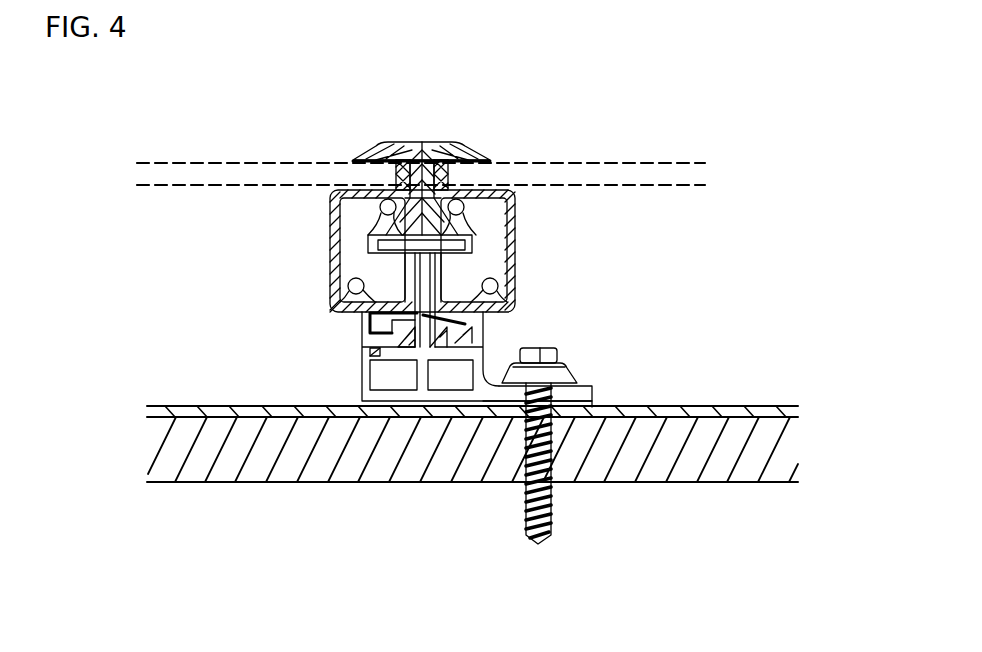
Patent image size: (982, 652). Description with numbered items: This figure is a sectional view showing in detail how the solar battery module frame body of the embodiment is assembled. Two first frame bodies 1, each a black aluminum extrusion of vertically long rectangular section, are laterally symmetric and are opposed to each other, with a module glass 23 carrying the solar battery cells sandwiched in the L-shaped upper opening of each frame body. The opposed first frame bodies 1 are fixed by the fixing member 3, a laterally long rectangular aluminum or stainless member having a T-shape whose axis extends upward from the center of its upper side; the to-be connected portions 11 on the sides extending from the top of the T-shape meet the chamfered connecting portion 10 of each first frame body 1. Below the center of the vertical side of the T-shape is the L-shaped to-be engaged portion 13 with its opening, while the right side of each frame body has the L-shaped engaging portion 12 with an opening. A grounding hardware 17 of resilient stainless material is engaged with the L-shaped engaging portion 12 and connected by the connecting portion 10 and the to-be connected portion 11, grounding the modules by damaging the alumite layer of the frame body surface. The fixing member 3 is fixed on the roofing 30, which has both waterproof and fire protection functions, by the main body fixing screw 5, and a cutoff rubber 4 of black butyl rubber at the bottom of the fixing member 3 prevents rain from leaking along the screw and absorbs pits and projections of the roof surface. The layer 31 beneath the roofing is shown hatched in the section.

The first frame body 1 is at (388, 143).
The fixing member 3 is at (578, 390).
The cutoff rubber 4 is at (365, 400).
The main body fixing screw 5 is at (549, 356).
The connecting portion 10 is at (340, 261).
The to-be connected portion 11 is at (340, 222).
The L-shaped engaging portion 12 is at (405, 332).
The L-shaped to-be engaged portion 13 is at (365, 321).
The grounding hardware 17 is at (480, 330).
The module glass 23 is at (606, 175).
The roofing 30 is at (213, 407).
The roof base 31 is at (270, 465).